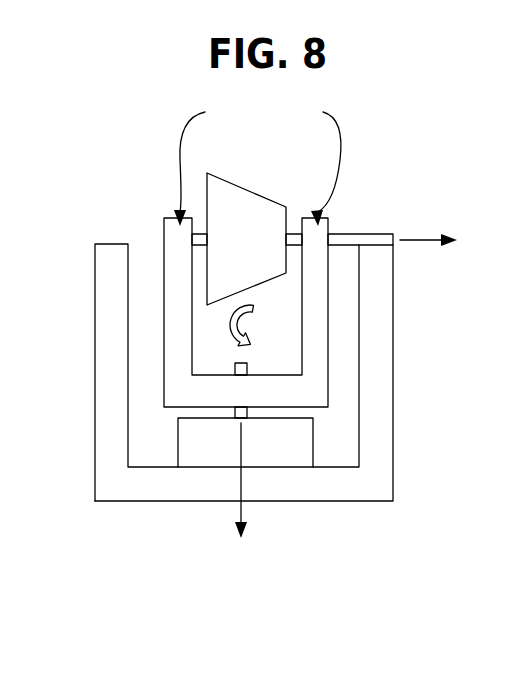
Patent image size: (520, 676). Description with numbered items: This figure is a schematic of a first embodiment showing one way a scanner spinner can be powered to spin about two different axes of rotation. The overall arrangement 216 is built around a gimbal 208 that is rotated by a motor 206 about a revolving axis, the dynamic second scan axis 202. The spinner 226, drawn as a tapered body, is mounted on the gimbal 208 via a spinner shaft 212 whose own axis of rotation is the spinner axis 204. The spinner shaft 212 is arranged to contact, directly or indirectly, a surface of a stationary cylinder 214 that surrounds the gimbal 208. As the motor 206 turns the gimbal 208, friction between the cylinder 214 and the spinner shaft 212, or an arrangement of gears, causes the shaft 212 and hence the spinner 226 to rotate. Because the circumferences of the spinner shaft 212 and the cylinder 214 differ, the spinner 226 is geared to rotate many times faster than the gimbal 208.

The dynamic second scan axis 202 is at (240, 495).
The spinner axis 204 is at (448, 240).
The motor 206 is at (192, 468).
The gimbal 208 is at (318, 384).
The spinner shaft 212 is at (362, 220).
The stationary cylinder 214 is at (395, 331).
The bearing test assembly 216 is at (126, 124).
The spinner 226 is at (254, 198).